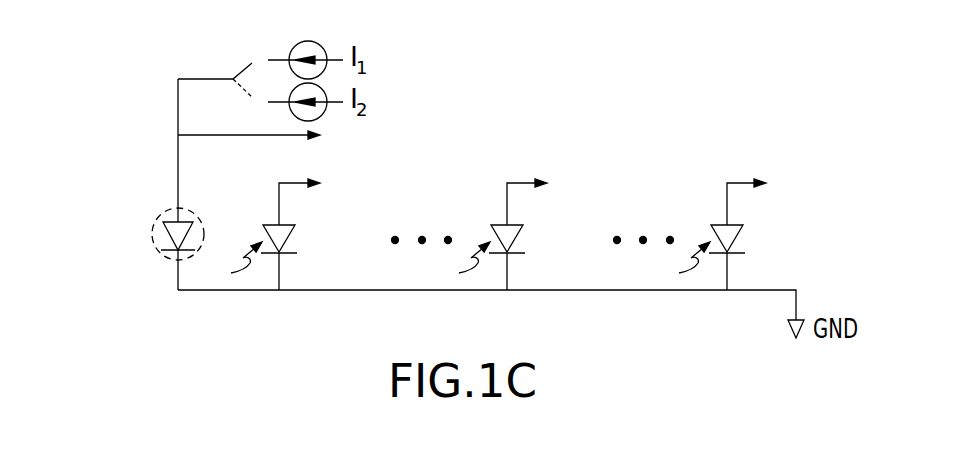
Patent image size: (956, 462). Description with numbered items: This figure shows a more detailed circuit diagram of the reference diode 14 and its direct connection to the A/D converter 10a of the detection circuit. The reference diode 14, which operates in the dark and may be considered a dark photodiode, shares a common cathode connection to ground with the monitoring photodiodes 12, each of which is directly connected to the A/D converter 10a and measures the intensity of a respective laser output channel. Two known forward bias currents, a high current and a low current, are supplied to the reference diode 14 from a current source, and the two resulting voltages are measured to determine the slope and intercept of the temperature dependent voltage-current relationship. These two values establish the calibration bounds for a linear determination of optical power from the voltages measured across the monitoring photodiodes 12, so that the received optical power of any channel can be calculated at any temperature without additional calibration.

The A/D converter 10a is at (530, 173).
The monitoring photodiodes 12 is at (295, 257).
The reference diode 14 is at (163, 259).